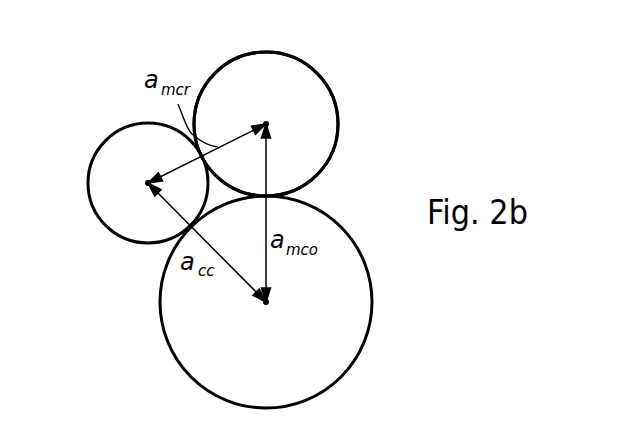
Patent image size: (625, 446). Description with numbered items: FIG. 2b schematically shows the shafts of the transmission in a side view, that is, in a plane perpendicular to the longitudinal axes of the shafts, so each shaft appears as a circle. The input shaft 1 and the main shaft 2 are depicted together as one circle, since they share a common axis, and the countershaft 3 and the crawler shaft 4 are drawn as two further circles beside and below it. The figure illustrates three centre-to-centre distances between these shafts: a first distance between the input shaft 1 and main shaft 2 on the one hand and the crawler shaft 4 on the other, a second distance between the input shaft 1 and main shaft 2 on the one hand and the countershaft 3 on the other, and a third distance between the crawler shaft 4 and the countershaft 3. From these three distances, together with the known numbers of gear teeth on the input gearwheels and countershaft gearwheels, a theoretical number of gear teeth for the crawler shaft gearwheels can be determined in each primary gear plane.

The input shaft 1 is at (317, 98).
The main shaft 2 is at (282, 109).
The countershaft 3 is at (371, 298).
The crawler shaft 4 is at (117, 150).